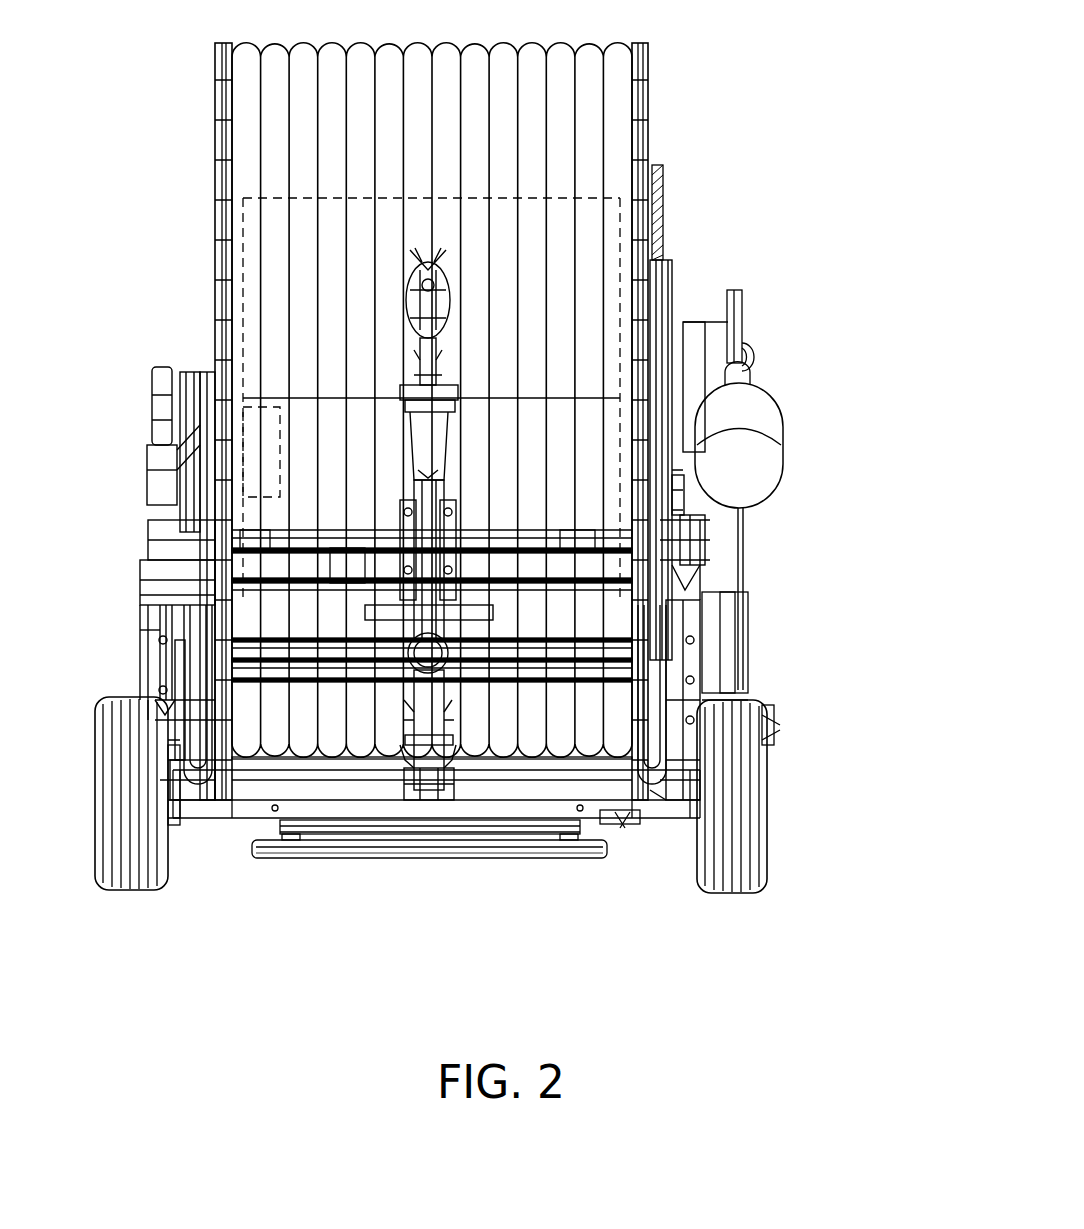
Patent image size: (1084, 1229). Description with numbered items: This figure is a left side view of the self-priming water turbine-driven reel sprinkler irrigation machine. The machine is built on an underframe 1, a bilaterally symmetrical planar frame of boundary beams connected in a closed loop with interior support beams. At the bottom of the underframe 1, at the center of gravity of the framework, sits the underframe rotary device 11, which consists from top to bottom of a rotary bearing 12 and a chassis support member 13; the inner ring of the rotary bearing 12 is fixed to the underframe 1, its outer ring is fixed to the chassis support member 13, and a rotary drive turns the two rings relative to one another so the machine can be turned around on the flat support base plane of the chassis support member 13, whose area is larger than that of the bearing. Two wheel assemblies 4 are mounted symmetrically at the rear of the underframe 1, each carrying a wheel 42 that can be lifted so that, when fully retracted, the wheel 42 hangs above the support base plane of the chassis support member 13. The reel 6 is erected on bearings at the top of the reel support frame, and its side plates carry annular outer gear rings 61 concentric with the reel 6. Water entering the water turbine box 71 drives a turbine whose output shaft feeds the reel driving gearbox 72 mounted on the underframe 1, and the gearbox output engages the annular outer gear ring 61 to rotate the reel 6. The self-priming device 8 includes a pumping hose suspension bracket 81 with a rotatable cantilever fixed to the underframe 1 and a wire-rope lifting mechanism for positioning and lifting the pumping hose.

The underframe 1 is at (605, 800).
The underframe rotary device 11 is at (568, 858).
The rotary bearing 12 is at (487, 820).
The chassis support member 13 is at (513, 911).
The wheel assembly 4 is at (496, 805).
The wheel 42 is at (745, 860).
The reel 6 is at (648, 120).
The annular outer gear ring 61 is at (666, 210).
The water turbine box 71 is at (712, 355).
The reel driving gearbox 72 is at (723, 653).
The self-priming device 8 is at (747, 417).
The pumping hose suspension bracket 81 is at (747, 343).